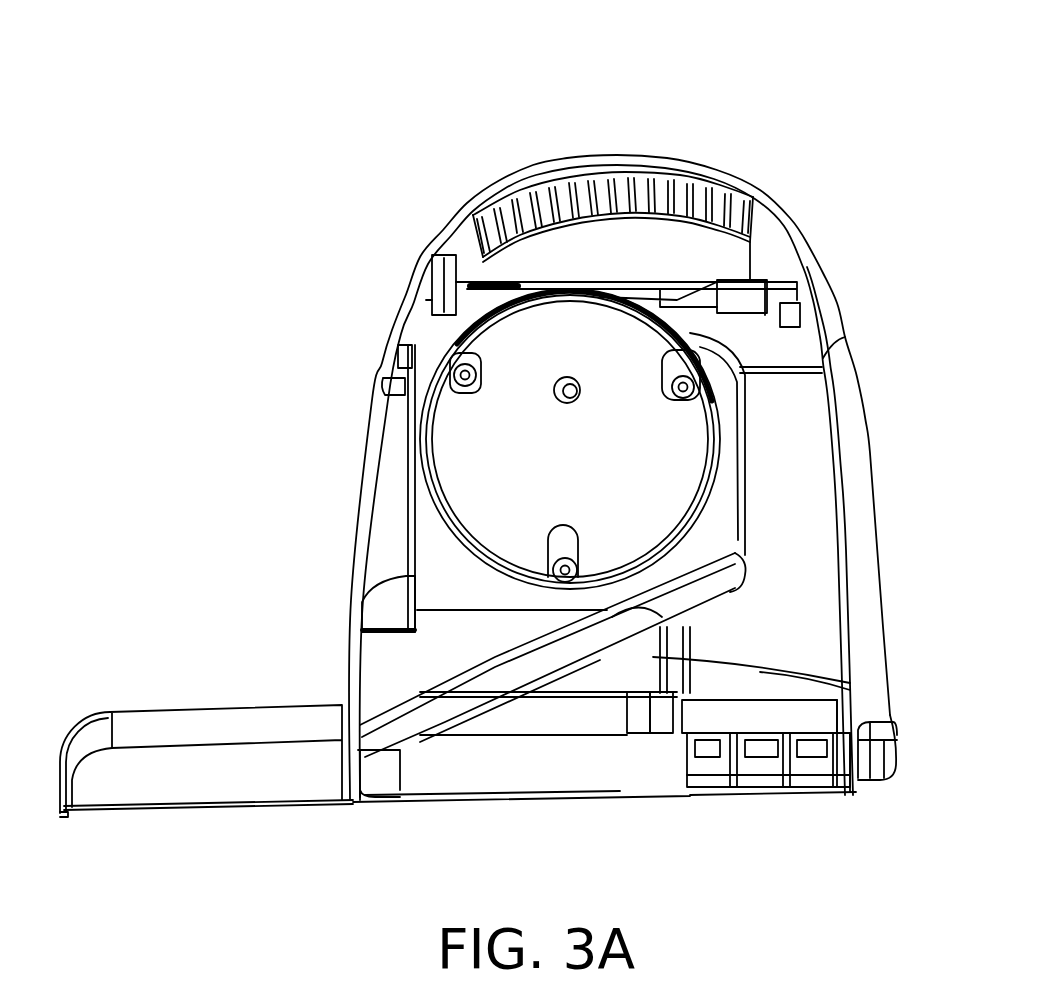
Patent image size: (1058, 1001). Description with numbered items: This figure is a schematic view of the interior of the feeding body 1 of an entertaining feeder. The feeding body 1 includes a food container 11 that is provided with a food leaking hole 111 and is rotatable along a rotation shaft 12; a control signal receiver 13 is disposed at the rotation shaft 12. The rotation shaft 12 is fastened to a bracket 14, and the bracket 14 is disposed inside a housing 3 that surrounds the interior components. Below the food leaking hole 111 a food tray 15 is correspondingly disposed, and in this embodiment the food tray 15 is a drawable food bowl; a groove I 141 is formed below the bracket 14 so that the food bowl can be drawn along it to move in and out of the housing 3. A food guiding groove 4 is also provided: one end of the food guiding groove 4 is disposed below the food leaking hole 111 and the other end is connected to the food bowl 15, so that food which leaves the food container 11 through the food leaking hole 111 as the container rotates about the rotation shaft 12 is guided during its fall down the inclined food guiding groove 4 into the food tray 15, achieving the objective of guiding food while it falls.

The feeding body 1 is at (640, 375).
The food container 11 is at (483, 453).
The food leaking hole 111 is at (450, 233).
The rotation shaft 12 is at (575, 378).
The control signal receiver 13 is at (563, 538).
The bracket 14 is at (380, 383).
The food tray 15 is at (242, 733).
The housing 3 is at (362, 562).
The food guiding groove 4 is at (480, 695).
The groove I 141 is at (553, 710).